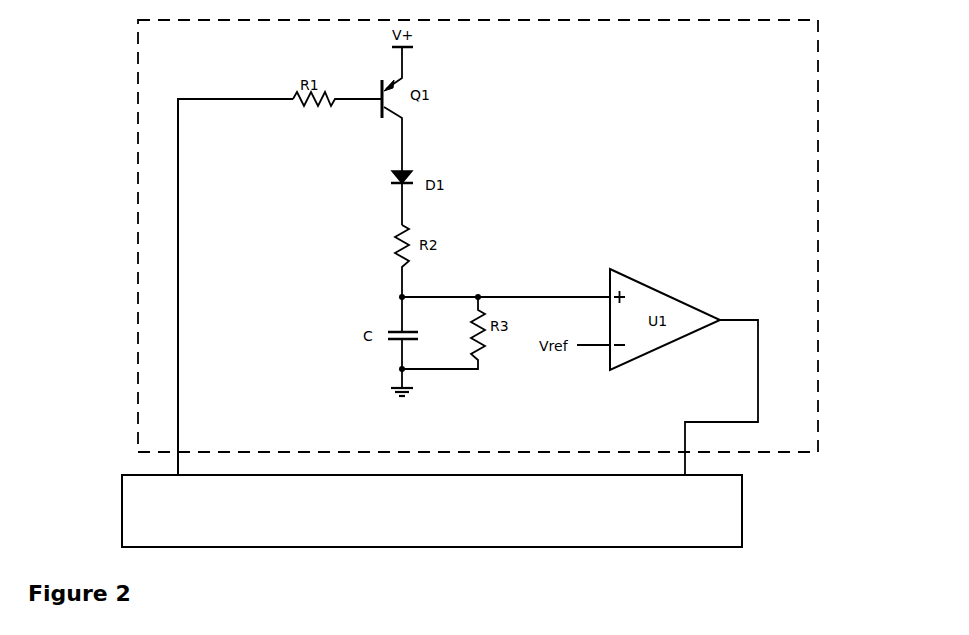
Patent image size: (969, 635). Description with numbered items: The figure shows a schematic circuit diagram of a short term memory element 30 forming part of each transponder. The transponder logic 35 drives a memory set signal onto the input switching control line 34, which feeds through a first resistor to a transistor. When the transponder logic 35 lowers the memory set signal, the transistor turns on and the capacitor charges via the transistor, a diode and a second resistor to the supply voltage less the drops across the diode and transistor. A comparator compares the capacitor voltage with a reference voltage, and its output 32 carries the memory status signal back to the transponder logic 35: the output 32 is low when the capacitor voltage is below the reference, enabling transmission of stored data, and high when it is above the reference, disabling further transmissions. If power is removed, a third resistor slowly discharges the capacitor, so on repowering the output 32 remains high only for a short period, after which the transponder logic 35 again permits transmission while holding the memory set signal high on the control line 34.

The short term memory element 30 is at (138, 87).
The output 32 is at (758, 320).
The input switching control line 34 is at (182, 99).
The transponder logic 35 is at (473, 523).